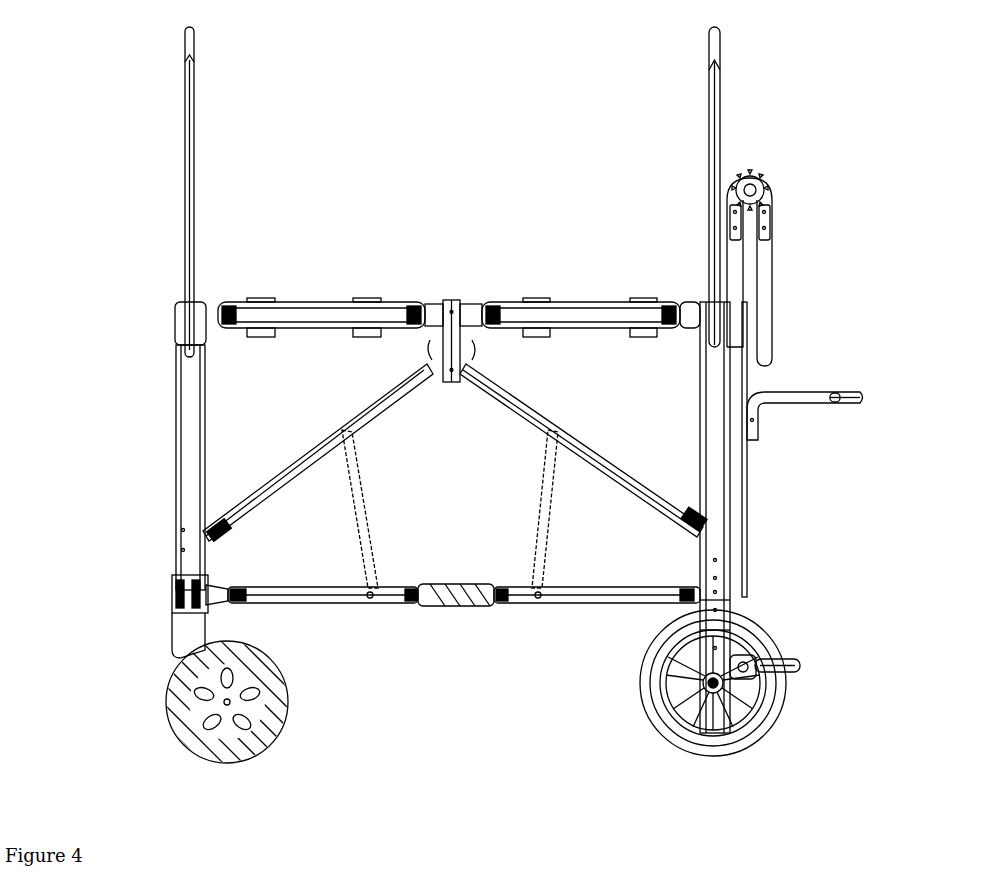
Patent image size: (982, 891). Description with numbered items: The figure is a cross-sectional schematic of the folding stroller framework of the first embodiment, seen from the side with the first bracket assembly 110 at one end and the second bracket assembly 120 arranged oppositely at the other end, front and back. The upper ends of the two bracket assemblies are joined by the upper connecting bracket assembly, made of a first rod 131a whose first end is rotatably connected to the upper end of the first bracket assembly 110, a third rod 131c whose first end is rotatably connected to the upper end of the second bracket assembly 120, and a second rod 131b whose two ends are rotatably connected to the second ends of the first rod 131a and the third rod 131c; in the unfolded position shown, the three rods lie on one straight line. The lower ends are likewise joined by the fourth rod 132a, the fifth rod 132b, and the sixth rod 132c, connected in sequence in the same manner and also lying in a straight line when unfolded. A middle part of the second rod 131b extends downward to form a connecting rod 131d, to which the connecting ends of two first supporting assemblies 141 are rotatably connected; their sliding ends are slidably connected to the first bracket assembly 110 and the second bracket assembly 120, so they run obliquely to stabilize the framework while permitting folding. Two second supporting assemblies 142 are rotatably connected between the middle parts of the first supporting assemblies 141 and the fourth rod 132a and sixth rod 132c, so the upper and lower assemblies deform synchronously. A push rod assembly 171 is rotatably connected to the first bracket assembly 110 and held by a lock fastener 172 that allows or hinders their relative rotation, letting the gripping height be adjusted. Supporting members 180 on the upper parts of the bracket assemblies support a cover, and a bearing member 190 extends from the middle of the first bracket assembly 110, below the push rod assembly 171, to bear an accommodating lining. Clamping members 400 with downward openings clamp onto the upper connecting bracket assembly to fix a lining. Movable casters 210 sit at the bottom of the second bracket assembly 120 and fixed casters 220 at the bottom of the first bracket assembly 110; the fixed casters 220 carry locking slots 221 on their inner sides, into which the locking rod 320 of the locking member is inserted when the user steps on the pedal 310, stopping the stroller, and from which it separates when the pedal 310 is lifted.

The first bracket assembly 110 is at (720, 522).
The second bracket assembly 120 is at (190, 395).
The first rod 131a is at (290, 312).
The second rod 131b is at (432, 308).
The third rod 131c is at (560, 312).
The connecting rod 131d is at (462, 305).
The fourth rod 132a is at (268, 595).
The fifth rod 132b is at (462, 602).
The sixth rod 132c is at (597, 598).
The first supporting assembly 141 is at (263, 482).
The second supporting assembly 142 is at (362, 598).
The push rod assembly 171 is at (765, 290).
The lock fastener 172 is at (755, 180).
The supporting member 180 is at (716, 82).
The bearing member 190 is at (782, 392).
The movable caster 210 is at (207, 745).
The fixed caster 220 is at (742, 733).
The locking slot 221 is at (752, 690).
The pedal 310 is at (792, 660).
The locking rod 320 is at (748, 665).
The clamping member 400 is at (252, 300).